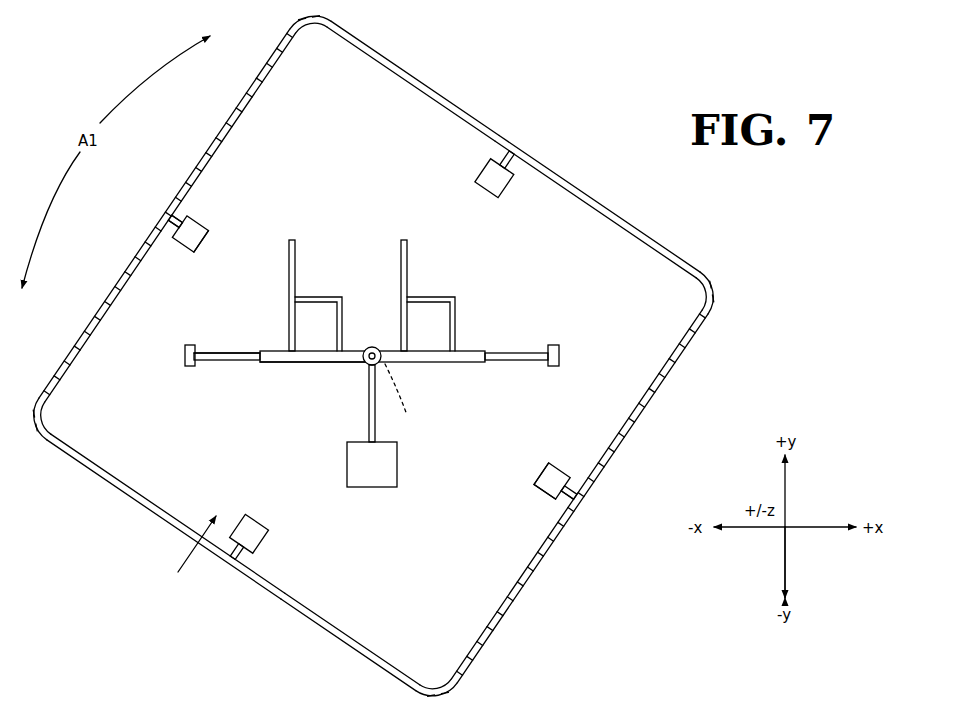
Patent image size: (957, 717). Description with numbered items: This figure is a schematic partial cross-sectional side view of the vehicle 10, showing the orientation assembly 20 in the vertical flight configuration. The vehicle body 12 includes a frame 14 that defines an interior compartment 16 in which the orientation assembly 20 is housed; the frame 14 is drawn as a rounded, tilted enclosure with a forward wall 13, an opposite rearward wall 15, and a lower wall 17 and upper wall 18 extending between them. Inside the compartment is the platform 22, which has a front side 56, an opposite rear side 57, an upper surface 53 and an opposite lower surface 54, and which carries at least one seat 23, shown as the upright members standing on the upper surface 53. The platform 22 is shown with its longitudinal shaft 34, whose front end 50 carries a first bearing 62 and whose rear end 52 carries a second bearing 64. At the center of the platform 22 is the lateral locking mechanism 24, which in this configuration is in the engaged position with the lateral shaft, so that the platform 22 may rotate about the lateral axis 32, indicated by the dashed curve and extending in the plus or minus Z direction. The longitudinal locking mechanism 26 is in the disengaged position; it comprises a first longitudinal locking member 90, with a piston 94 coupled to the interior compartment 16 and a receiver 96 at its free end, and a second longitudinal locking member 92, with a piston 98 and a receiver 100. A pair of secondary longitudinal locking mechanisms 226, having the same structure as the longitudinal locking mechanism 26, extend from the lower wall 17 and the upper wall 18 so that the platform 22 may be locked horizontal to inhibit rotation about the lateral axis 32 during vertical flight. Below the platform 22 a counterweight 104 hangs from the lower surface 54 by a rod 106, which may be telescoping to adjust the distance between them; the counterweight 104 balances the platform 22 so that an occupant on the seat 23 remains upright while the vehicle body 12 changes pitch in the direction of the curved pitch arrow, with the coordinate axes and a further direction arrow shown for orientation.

The vehicle 10 is at (475, 81).
The vehicle body 12 is at (513, 145).
The forward wall 13 is at (497, 634).
The frame 14 is at (268, 566).
The rearward wall 15 is at (207, 141).
The interior compartment 16 is at (180, 552).
The lower wall 17 is at (328, 637).
The upper wall 18 is at (582, 178).
The orientation assembly 20 is at (361, 346).
The platform 22 is at (239, 356).
The seat 23 is at (300, 247).
The lateral locking mechanism 24 is at (365, 333).
The longitudinal locking mechanism 26 is at (206, 213).
The lateral axis 32 is at (409, 398).
The longitudinal shaft 34 is at (210, 342).
The front end 50 is at (493, 327).
The rear end 52 is at (200, 362).
The upper surface 53 is at (463, 348).
The lower surface 54 is at (263, 362).
The front side 56 is at (493, 350).
The rear side 57 is at (259, 352).
The first bearing 62 is at (560, 353).
The second bearing 64 is at (185, 357).
The first longitudinal locking member 90 is at (544, 498).
The second longitudinal locking member 92 is at (176, 243).
The piston 94 is at (564, 503).
The receiver 96 is at (549, 464).
The piston 98 is at (178, 213).
The receiver 100 is at (205, 232).
The counterweight 104 is at (347, 475).
The rod 106 is at (368, 413).
The secondary longitudinal locking mechanisms 226 is at (477, 159).